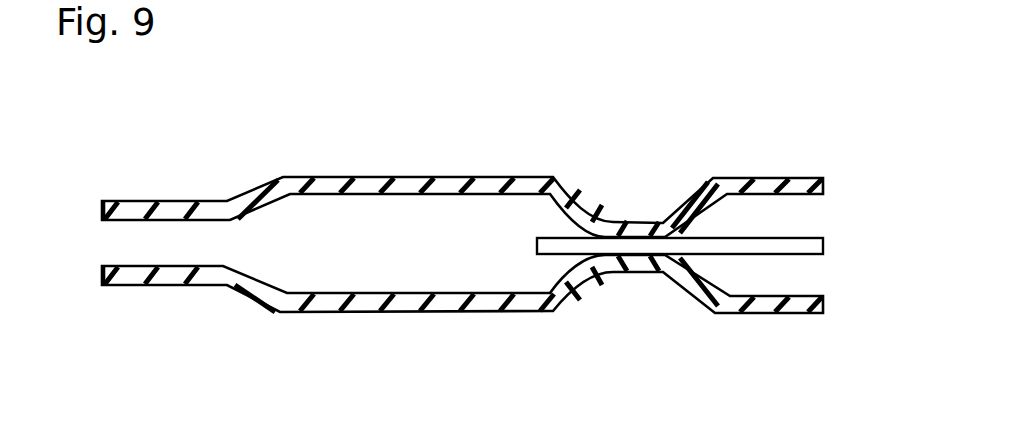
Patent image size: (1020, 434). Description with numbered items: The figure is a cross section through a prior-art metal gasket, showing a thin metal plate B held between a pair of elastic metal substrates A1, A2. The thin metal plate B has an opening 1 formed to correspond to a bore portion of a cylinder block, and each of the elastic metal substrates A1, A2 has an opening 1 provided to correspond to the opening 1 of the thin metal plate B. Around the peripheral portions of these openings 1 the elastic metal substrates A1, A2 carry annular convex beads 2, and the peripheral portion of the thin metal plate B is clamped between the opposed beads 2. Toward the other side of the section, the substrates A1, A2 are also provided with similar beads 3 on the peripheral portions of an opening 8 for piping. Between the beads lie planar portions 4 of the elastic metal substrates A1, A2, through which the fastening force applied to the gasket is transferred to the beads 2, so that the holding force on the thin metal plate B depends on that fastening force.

The opening 1 is at (920, 259).
The annular convex bead 2 is at (680, 205).
The bead 3 is at (237, 193).
The planar portion 4 is at (410, 177).
The opening for piping 8 is at (92, 254).
The elastic metal substrate A1 is at (823, 186).
The elastic metal substrate A2 is at (823, 305).
The thin metal plate B is at (823, 246).